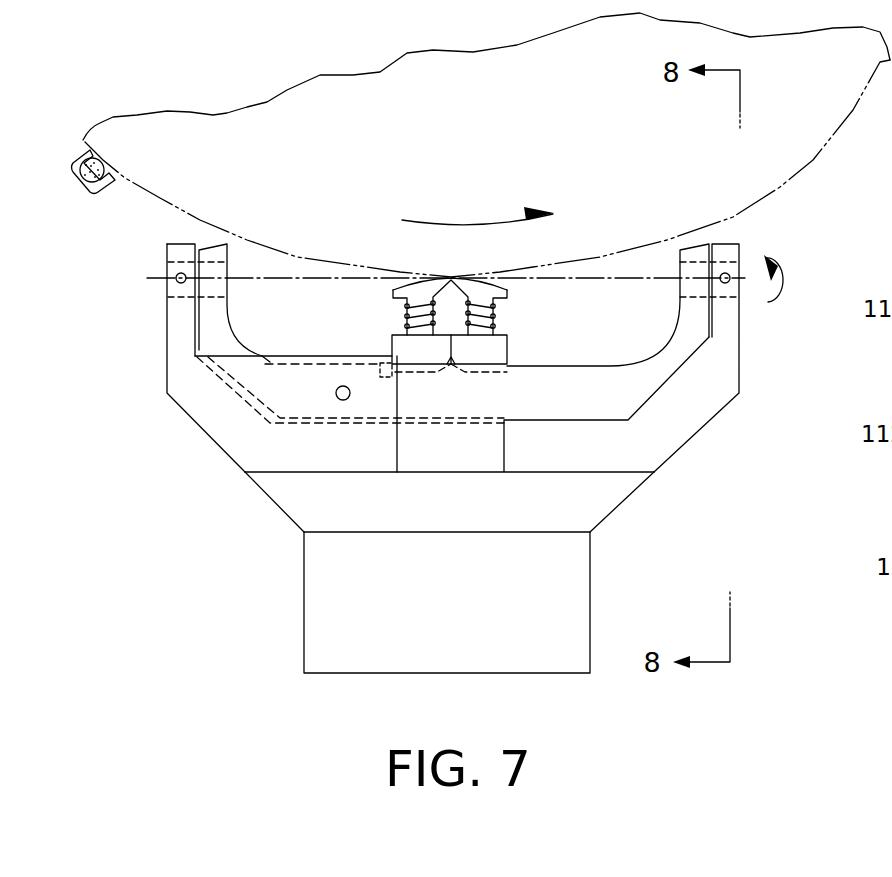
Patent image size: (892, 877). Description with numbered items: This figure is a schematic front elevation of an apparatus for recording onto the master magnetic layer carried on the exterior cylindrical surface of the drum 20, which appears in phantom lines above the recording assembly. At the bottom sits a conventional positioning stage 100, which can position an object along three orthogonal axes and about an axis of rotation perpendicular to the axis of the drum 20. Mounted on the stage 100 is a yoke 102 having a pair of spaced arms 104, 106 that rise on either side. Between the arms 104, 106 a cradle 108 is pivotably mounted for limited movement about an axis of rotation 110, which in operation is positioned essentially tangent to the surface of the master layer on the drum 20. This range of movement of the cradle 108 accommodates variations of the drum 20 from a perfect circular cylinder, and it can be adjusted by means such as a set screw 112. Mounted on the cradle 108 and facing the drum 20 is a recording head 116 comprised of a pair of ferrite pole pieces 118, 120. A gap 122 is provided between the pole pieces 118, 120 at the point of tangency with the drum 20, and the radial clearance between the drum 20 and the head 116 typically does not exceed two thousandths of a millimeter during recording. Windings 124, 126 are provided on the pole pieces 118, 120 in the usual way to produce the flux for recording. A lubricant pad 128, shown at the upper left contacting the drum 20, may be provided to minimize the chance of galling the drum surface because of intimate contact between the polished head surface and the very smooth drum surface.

The drum 20 is at (845, 107).
The positioning stage 100 is at (462, 612).
The yoke 102 is at (598, 502).
The arm 104 is at (212, 430).
The arm 106 is at (700, 404).
The cradle 108 is at (628, 398).
The axis of rotation 110 is at (147, 278).
The set screw 112 is at (343, 401).
The recording head 116 is at (512, 307).
The ferrite pole piece 118 is at (392, 341).
The ferrite pole piece 120 is at (507, 352).
The gap 122 is at (457, 268).
The winding 124 is at (500, 320).
The winding 126 is at (398, 307).
The lubricant pad 128 is at (108, 162).